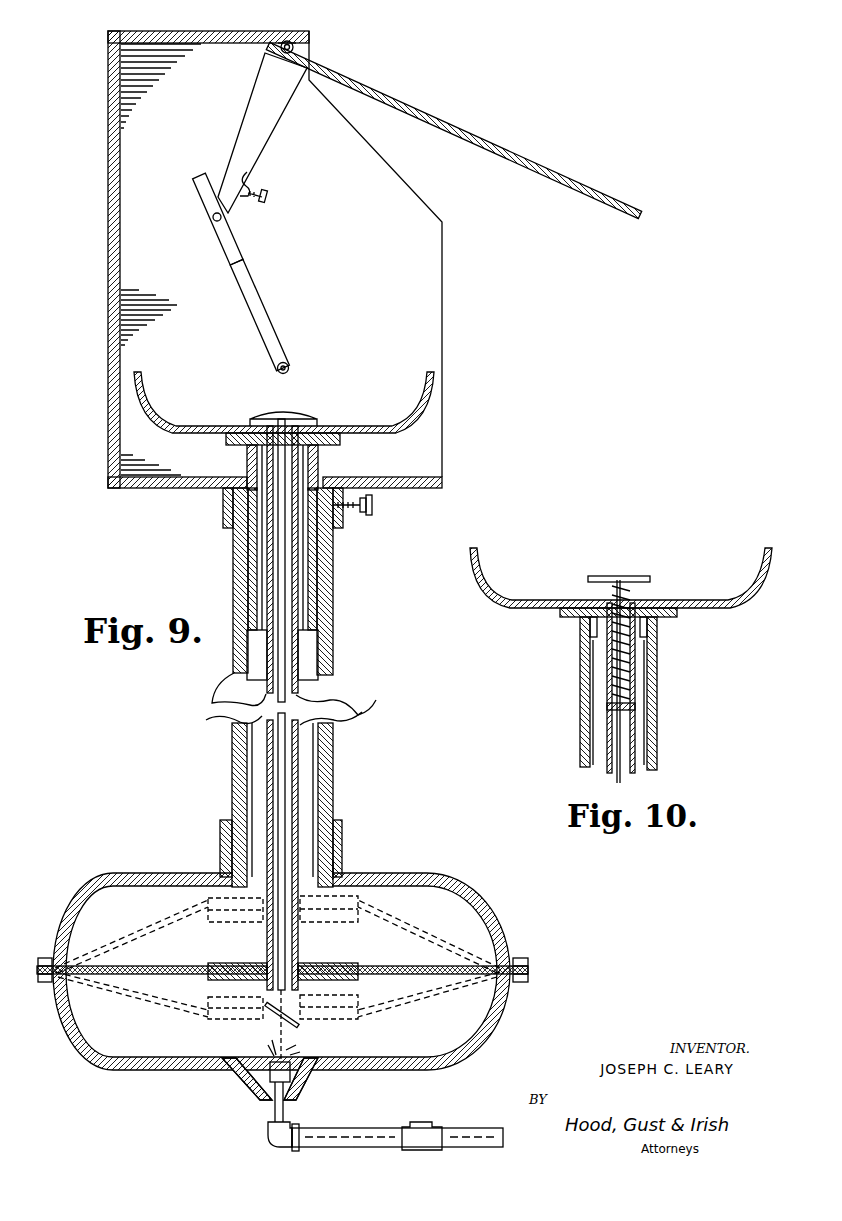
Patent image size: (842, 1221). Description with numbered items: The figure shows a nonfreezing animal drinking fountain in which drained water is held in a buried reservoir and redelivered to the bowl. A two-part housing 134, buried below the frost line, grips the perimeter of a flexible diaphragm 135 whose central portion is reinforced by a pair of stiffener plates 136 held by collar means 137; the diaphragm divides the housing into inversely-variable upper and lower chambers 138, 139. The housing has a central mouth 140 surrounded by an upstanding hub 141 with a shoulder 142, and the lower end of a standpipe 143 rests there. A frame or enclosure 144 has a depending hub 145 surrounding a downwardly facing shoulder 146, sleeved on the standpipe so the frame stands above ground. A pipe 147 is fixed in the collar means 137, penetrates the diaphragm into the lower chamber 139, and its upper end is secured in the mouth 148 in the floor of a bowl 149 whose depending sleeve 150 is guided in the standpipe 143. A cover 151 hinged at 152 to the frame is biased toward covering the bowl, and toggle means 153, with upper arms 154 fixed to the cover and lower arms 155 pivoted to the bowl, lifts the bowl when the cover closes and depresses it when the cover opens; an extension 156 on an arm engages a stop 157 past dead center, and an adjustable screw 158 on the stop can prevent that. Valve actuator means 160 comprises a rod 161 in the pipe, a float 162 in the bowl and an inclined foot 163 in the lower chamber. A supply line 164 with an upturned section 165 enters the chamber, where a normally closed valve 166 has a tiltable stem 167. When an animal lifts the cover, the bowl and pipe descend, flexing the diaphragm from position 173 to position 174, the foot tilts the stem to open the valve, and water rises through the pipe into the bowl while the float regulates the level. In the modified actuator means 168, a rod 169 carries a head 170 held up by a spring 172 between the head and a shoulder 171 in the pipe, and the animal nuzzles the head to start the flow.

In FIG. 9, the two-part housing 134 is at (474, 873).
In FIG. 9, the flexible diaphragm 135 is at (420, 968).
In FIG. 9, the stiffener plates 136 is at (338, 962).
In FIG. 9, the collar means 137 is at (255, 962).
In FIG. 9, the upper chamber 138 is at (416, 919).
In FIG. 9, the lower chamber 139 is at (413, 1032).
In FIG. 9, the central mouth 140 is at (220, 863).
In FIG. 9, the upstanding hub 141 is at (343, 828).
In FIG. 9, the shoulder 142 is at (333, 860).
In FIG. 9, the standpipe 143 is at (232, 680).
In FIG. 9, the frame or enclosure 144 is at (108, 325).
In FIG. 9, the depending hub 145 is at (345, 520).
In FIG. 9, the downwardly facing shoulder 146 is at (223, 500).
In FIG. 9, the pipe or conduit means 147 is at (312, 727).
In FIG. 10, the pipe or conduit means 147 is at (635, 748).
In FIG. 9, the mouth 148 is at (262, 478).
In FIG. 10, the mouth 148 is at (657, 646).
In FIG. 9, the bowl 149 is at (338, 372).
In FIG. 10, the bowl 149 is at (690, 547).
In FIG. 9, the depending sleeve 150 is at (328, 460).
In FIG. 9, the cover 151 is at (452, 127).
In FIG. 9, the hinge 152 is at (300, 49).
In FIG. 9, the toggle means 153 is at (202, 111).
In FIG. 9, the upper arms 154 is at (272, 106).
In FIG. 9, the lower arms 155 is at (252, 281).
In FIG. 9, the extension 156 is at (198, 172).
In FIG. 9, the stop 157 is at (255, 170).
In FIG. 9, the screw 158 is at (265, 196).
In FIG. 9, the valve actuator means 160 is at (232, 402).
In FIG. 9, the rod 161 is at (280, 552).
In FIG. 9, the float 162 is at (313, 418).
In FIG. 9, the foot 163 is at (298, 1030).
In FIG. 9, the supply line 164 is at (375, 1128).
In FIG. 9, the upturned section 165 is at (290, 1120).
In FIG. 9, the valve 166 is at (270, 1068).
In FIG. 9, the tiltable stem 167 is at (300, 1047).
In FIG. 10, the actuator means 168 is at (592, 559).
In FIG. 10, the rod 169 is at (625, 775).
In FIG. 10, the head 170 is at (648, 570).
In FIG. 10, the shoulder 171 is at (635, 717).
In FIG. 10, the spring 172 is at (610, 590).
In FIG. 9, the diaphragm upper position 173 is at (150, 928).
In FIG. 9, the diaphragm depressed position 174 is at (155, 1000).